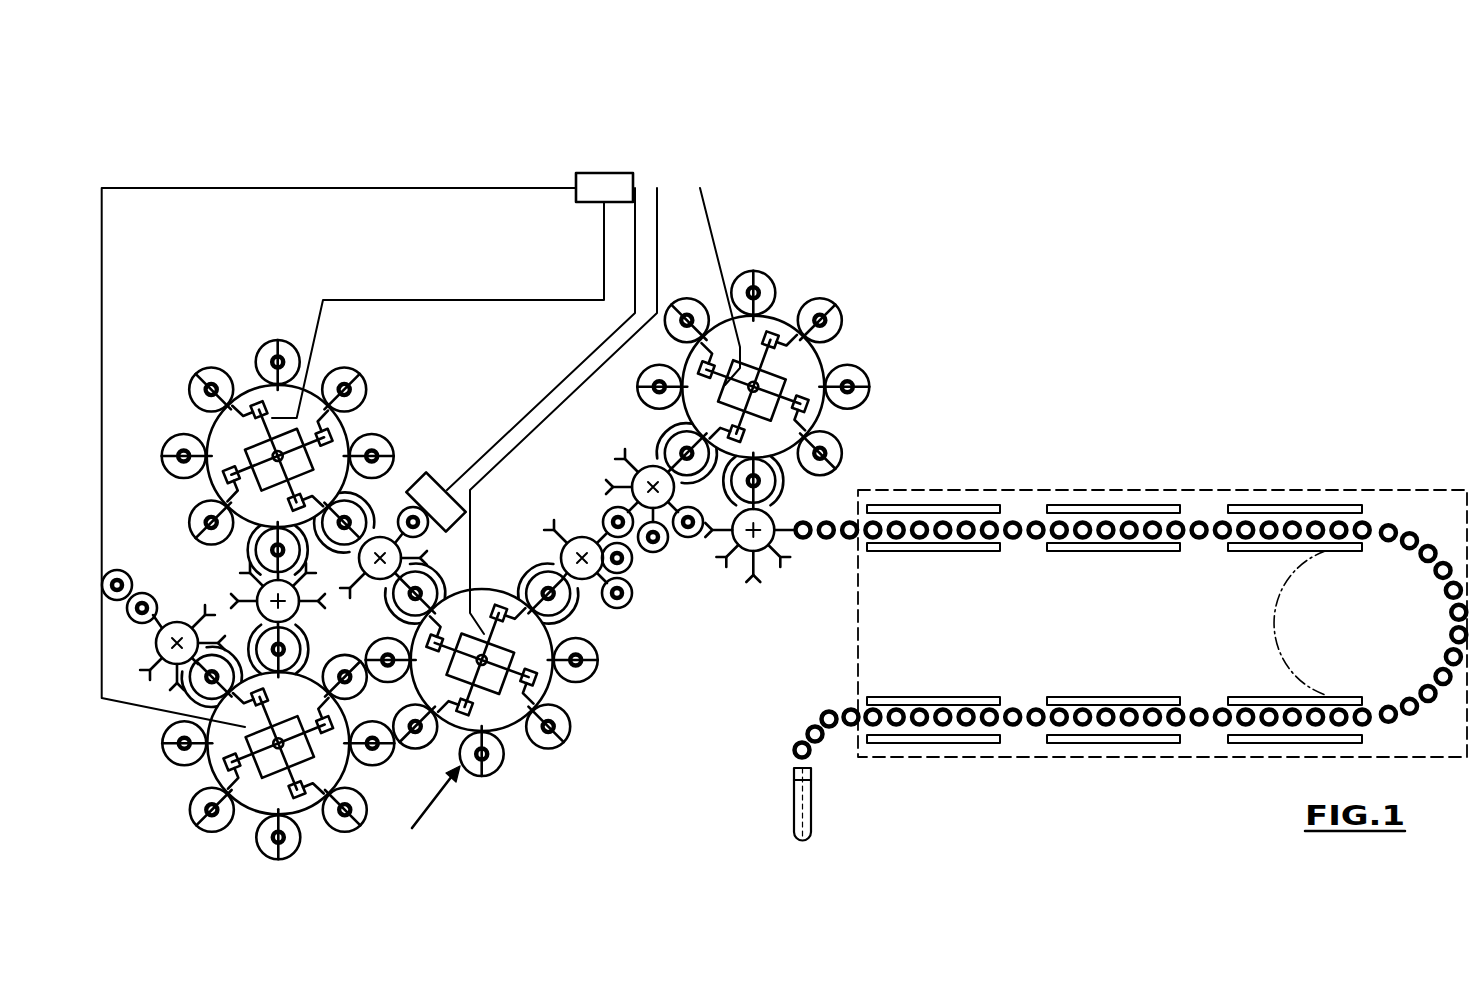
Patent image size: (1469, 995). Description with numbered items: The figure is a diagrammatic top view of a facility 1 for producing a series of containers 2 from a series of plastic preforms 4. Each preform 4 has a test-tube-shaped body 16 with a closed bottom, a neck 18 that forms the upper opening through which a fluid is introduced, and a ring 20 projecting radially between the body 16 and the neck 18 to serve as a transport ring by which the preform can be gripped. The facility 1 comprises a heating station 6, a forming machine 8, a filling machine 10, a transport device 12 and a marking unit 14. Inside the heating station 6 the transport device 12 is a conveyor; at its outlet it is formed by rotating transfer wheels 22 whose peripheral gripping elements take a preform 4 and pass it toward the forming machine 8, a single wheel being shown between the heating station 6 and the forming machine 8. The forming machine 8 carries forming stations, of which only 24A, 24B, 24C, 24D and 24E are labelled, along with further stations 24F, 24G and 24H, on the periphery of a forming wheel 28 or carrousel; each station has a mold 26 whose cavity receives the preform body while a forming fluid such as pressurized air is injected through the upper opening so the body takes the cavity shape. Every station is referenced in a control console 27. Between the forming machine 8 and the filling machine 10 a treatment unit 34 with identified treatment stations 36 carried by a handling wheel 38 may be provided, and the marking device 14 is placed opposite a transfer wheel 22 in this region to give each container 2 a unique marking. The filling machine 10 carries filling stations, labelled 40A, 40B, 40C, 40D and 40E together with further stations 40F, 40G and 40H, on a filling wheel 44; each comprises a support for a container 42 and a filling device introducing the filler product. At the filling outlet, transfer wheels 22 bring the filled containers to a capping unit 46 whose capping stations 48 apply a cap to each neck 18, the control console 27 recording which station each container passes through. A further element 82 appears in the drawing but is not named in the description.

The production facility 1 is at (428, 811).
The containers 2 is at (118, 570).
The preforms 4 is at (824, 521).
The heating station 6 is at (1160, 758).
The forming machine 8 is at (784, 317).
The filling machine 10 is at (343, 437).
The transport device 12 is at (658, 552).
The marking unit 14 is at (440, 487).
The body 16 is at (793, 816).
The neck 18 is at (792, 776).
The ring 20 is at (793, 781).
The transfer wheels 22 is at (467, 565).
The forming station 24A is at (782, 475).
The forming station 24B is at (842, 450).
The forming station 24C is at (870, 386).
The forming station 24D is at (836, 308).
The forming station 24E is at (764, 278).
The processing station 24F is at (682, 290).
The processing station 24G is at (638, 400).
The processing station 24H is at (660, 439).
The mold 26 is at (748, 279).
The control console 27 is at (625, 178).
The forming wheel 28 is at (778, 386).
The treatment unit 34 is at (530, 742).
The treatment stations 36 is at (488, 772).
The handling wheel 38 is at (530, 666).
The filling station 40A is at (375, 497).
The filling station 40B is at (402, 443).
The filling station 40C is at (342, 370).
The filling station 40D is at (272, 338).
The filling station 40E is at (214, 370).
The processing station 40F is at (165, 443).
The processing station 40G is at (192, 528).
The processing station 40H is at (250, 559).
The support for a container 42 is at (202, 386).
The filling wheel 44 is at (245, 497).
The capping unit 46 is at (305, 753).
The capping stations 48 is at (176, 754).
The transfer star 82 is at (560, 549).